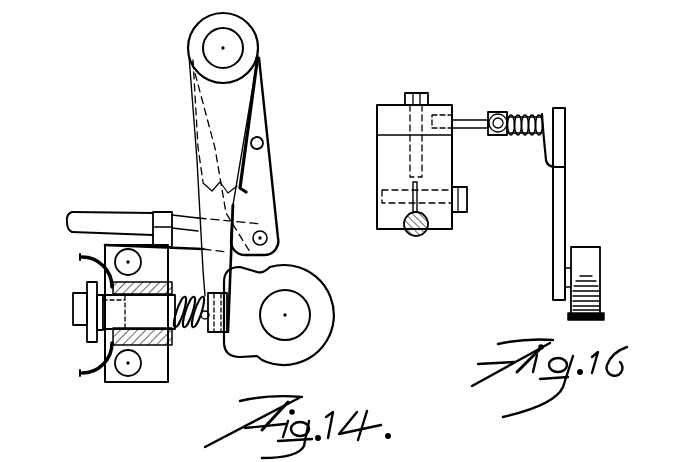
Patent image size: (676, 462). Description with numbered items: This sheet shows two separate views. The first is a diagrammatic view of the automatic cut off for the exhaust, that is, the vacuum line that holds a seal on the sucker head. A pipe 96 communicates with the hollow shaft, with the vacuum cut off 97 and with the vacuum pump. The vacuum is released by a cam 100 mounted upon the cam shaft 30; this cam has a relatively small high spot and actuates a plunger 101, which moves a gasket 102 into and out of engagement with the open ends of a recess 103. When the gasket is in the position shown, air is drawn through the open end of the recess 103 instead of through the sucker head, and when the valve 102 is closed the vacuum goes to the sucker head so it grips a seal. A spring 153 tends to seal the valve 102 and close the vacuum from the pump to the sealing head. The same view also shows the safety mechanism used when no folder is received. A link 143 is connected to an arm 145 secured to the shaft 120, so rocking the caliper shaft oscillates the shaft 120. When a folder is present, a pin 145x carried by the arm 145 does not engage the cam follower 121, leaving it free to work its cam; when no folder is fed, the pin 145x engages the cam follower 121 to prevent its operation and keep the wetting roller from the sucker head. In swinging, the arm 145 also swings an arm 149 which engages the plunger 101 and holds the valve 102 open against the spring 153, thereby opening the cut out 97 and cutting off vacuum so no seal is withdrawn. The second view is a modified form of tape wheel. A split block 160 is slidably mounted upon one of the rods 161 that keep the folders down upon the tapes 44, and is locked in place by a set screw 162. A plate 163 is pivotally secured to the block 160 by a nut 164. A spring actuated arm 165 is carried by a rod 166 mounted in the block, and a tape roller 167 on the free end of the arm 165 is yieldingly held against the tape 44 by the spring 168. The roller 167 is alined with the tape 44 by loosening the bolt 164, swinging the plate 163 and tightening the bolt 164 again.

In FIG. 14, the shaft 120 is at (226, 48).
In FIG. 14, the arm 149 is at (228, 123).
In FIG. 14, the arm 145 is at (273, 212).
In FIG. 14, the pin 145x is at (263, 142).
In FIG. 14, the cam follower 121 is at (241, 174).
In FIG. 14, the link 143 is at (95, 222).
In FIG. 14, the recess 103 is at (87, 290).
In FIG. 14, the plunger 101 is at (73, 312).
In FIG. 14, the gasket 102 is at (87, 340).
In FIG. 14, the pipe 96 is at (80, 257).
In FIG. 14, the vacuum cut off 97 is at (175, 338).
In FIG. 14, the spring 153 is at (201, 336).
In FIG. 14, the cam 100 is at (318, 336).
In FIG. 14, the cam shaft 30 is at (288, 316).
In FIG. 16, the split block 160 is at (437, 165).
In FIG. 16, the nut 164 is at (422, 95).
In FIG. 16, the plate 163 is at (448, 105).
In FIG. 16, the set screw 162 is at (467, 205).
In FIG. 16, the rod 161 is at (425, 235).
In FIG. 16, the rod 166 is at (477, 122).
In FIG. 16, the spring 168 is at (565, 145).
In FIG. 16, the spring actuated arm 165 is at (563, 197).
In FIG. 16, the tape roller 167 is at (585, 247).
In FIG. 16, the tape 44 is at (568, 319).